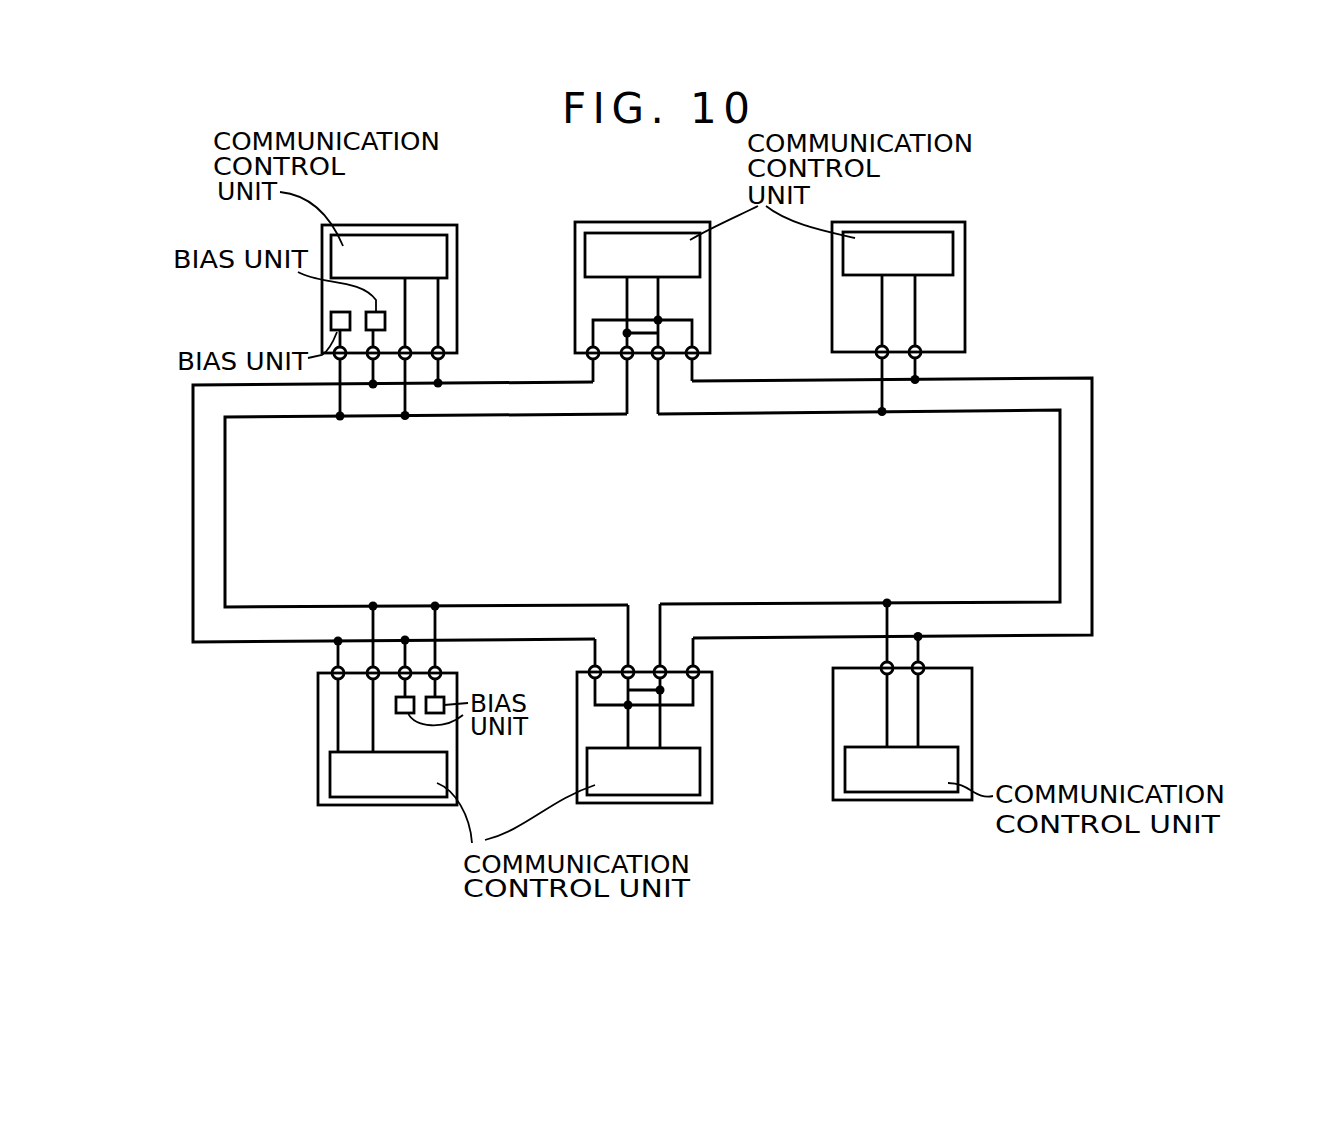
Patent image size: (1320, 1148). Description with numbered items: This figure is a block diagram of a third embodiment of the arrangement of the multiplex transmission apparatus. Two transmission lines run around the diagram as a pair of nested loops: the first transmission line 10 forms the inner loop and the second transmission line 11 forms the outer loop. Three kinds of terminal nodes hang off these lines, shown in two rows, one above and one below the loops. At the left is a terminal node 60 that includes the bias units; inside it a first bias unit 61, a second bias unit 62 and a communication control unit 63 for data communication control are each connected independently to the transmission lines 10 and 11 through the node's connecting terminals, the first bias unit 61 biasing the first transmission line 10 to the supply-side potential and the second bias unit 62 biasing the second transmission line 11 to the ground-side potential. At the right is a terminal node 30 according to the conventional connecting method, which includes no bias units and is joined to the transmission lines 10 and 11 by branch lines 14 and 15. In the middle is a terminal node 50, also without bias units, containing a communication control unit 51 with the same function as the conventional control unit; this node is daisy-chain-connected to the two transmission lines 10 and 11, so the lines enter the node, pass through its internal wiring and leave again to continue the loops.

The first transmission line 10 is at (225, 500).
The second transmission line 11 is at (193, 500).
The branch line 14 is at (882, 370).
The branch line 15 is at (915, 370).
The terminal node 30 is at (935, 222).
The terminal node 50 is at (676, 222).
The communication control unit 51 is at (700, 250).
The terminal node 60 is at (425, 225).
The first bias unit 61 is at (330, 320).
The second bias unit 62 is at (350, 288).
The communication control unit 63 is at (447, 252).